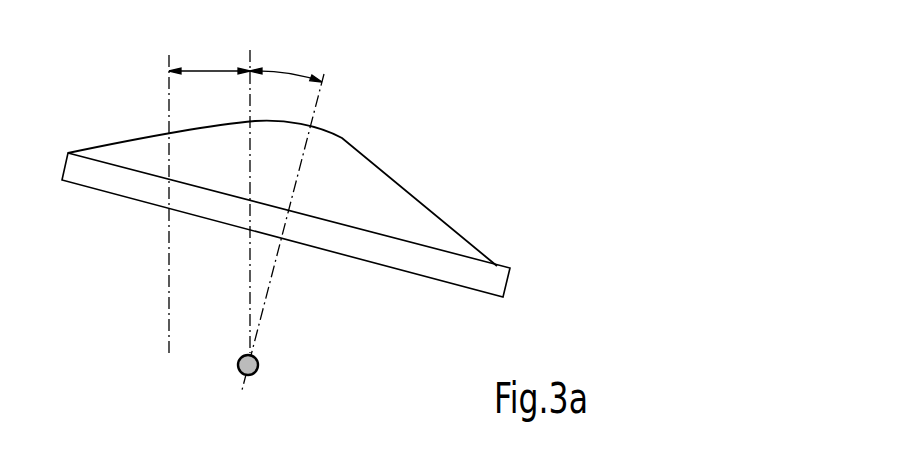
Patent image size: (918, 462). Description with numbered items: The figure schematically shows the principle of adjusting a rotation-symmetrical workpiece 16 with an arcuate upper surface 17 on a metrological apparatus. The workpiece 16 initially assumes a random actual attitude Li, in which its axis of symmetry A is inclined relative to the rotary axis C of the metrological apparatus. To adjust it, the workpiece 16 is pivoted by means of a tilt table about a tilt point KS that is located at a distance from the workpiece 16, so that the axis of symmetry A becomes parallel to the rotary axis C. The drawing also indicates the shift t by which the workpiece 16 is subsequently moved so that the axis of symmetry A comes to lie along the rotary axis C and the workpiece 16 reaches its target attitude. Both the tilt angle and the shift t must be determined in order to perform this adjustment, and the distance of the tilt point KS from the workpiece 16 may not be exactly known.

The workpiece 16 is at (512, 278).
The upper surface 17 is at (440, 210).
The actual attitude Li is at (465, 152).
The axis of symmetry A is at (313, 118).
The rotary axis C is at (167, 303).
The tilt point KS is at (259, 363).
The shift t is at (210, 70).